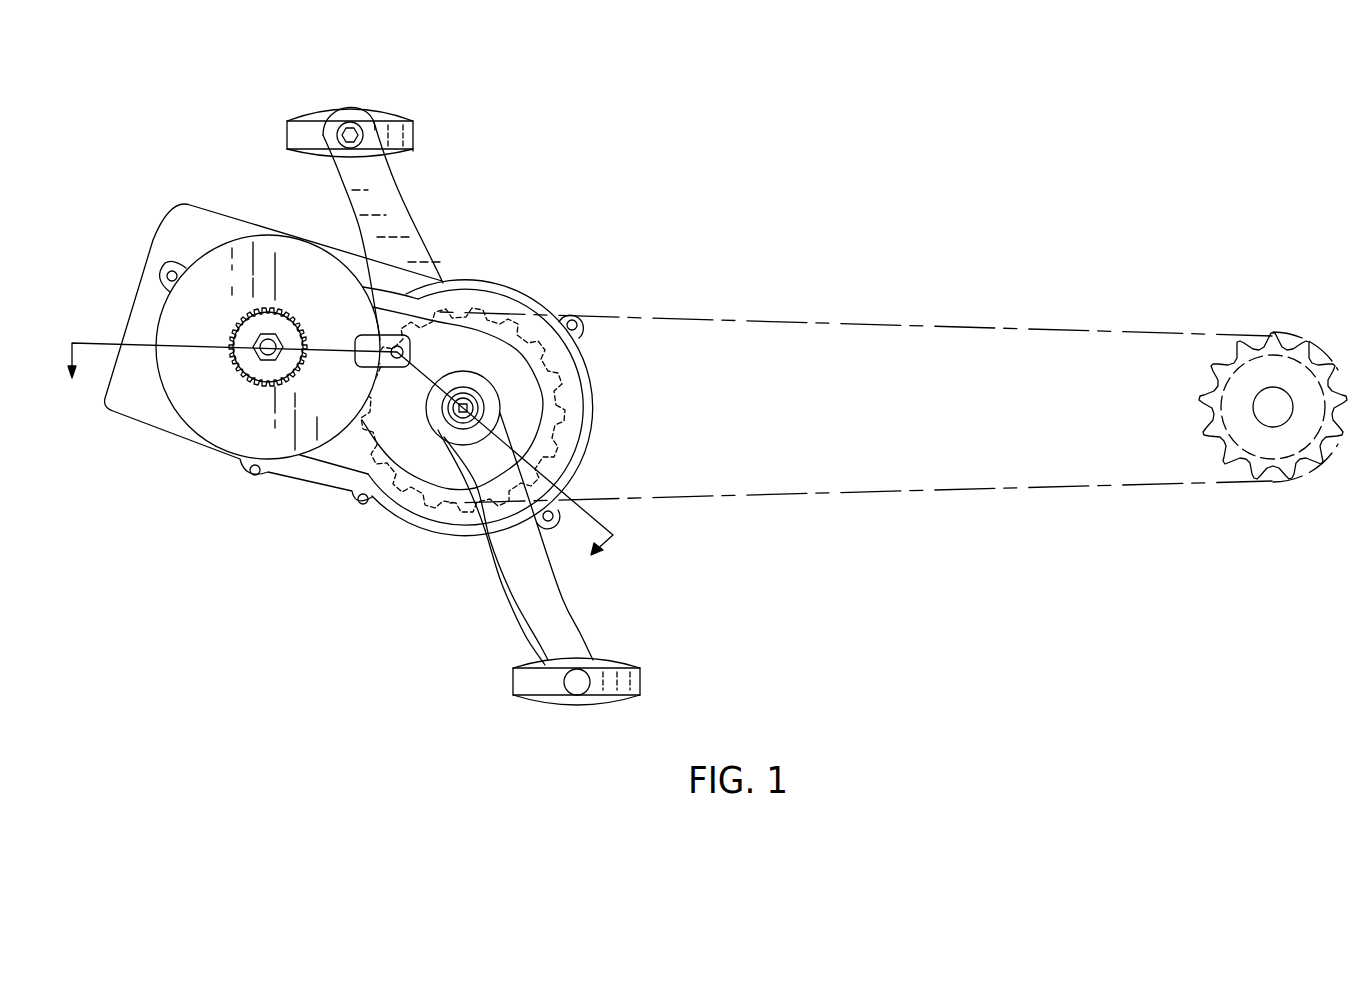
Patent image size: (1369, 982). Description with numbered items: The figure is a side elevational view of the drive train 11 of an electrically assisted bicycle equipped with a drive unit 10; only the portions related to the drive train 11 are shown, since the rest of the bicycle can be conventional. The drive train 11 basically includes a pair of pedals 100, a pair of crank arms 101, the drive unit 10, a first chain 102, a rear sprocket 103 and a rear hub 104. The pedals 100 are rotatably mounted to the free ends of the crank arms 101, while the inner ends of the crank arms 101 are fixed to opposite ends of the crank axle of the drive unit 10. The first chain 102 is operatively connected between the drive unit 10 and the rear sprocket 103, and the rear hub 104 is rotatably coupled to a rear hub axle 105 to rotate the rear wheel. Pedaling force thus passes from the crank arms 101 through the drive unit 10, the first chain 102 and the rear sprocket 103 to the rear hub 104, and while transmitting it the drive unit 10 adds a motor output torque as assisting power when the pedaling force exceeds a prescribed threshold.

The drive unit 10 is at (549, 272).
The drive train 11 is at (971, 298).
The pedals 100 is at (302, 98).
The crank arms 101 is at (424, 216).
The first chain 102 is at (962, 492).
The rear sprocket 103 is at (1235, 426).
The rear hub 104 is at (1214, 385).
The rear hub axle 105 is at (1278, 412).